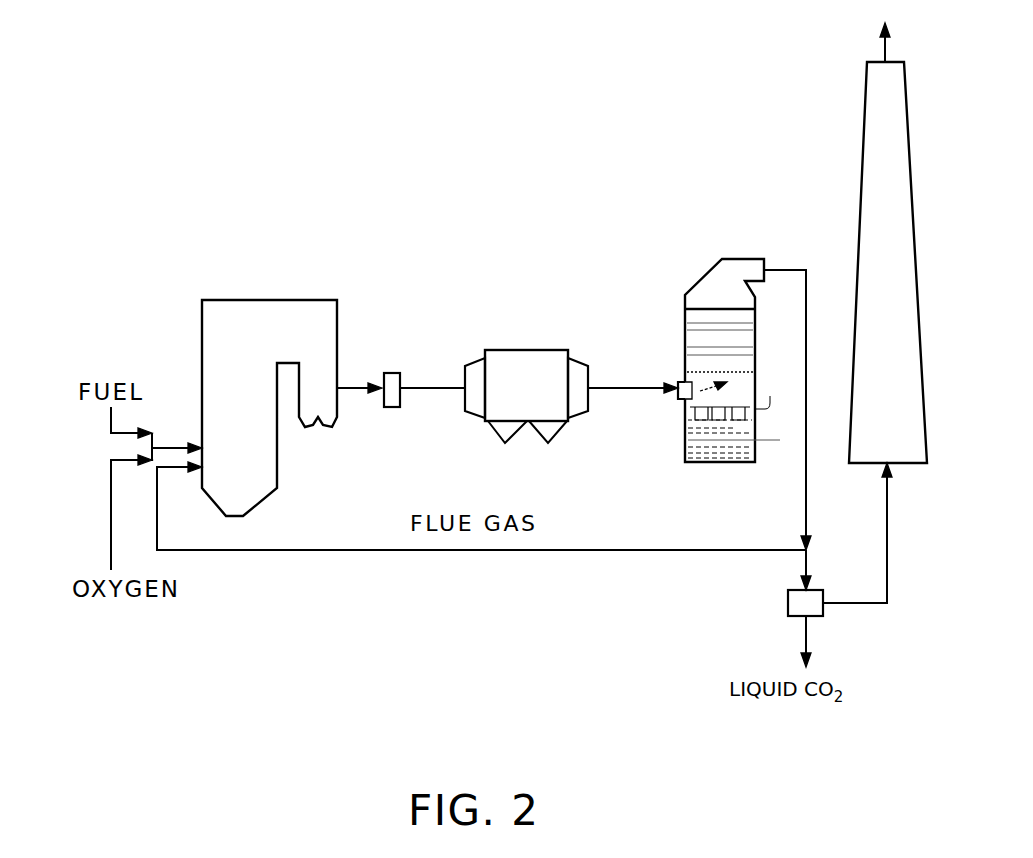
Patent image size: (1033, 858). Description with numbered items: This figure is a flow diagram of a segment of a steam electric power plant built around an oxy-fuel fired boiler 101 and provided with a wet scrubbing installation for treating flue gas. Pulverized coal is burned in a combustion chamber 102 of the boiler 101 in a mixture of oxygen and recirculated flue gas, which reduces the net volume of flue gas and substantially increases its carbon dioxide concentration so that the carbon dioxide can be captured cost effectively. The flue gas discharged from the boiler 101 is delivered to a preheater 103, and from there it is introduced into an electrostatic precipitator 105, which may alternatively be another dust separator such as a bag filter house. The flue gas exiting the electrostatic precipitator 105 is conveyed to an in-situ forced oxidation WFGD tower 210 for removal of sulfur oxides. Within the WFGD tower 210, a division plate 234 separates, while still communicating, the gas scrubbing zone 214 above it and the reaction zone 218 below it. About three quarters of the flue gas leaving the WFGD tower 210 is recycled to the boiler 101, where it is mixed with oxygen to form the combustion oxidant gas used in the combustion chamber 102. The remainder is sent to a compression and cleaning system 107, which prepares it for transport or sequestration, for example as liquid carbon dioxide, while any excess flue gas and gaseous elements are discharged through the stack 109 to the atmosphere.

The oxy-fuel fired boiler 101 is at (236, 300).
The combustion chamber 102 is at (238, 446).
The preheater 103 is at (401, 372).
The electrostatic precipitator 105 is at (502, 350).
The compression and cleaning system 107 is at (788, 597).
The stack 109 is at (858, 187).
The in-situ forced oxidation WFGD tower 210 is at (682, 386).
The gas scrubbing zone 214 is at (713, 354).
The division plate 234 is at (688, 410).
The reaction zone 218 is at (713, 455).